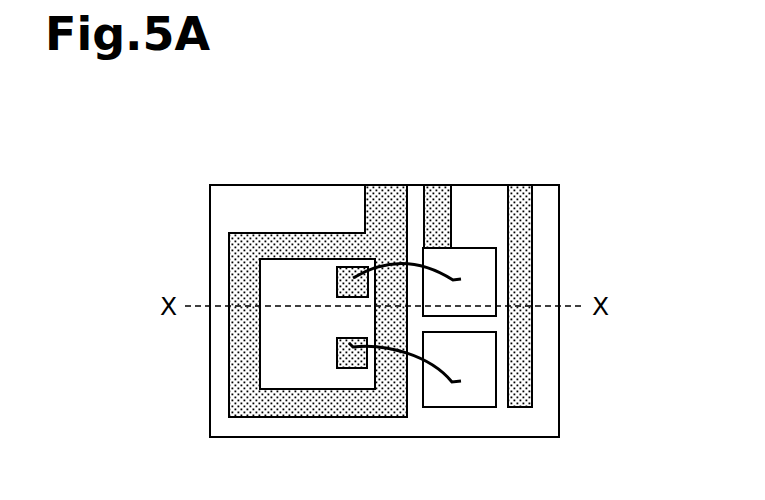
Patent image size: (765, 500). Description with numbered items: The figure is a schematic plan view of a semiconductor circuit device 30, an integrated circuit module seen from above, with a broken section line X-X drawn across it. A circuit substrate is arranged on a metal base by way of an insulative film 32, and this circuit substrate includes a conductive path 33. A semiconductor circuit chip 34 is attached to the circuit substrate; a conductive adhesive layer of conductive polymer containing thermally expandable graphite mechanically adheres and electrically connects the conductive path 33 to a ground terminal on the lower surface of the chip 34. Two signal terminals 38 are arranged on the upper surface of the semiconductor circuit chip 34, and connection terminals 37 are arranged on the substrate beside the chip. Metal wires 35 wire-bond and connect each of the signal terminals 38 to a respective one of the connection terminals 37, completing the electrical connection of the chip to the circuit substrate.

The semiconductor circuit device 30 is at (229, 144).
The insulative film 32 is at (547, 418).
The conductive path 33 is at (523, 212).
The semiconductor circuit chip 34 is at (283, 372).
The metal wires 35 is at (414, 258).
The connection terminals 37 is at (477, 258).
The signal terminals 38 is at (353, 278).